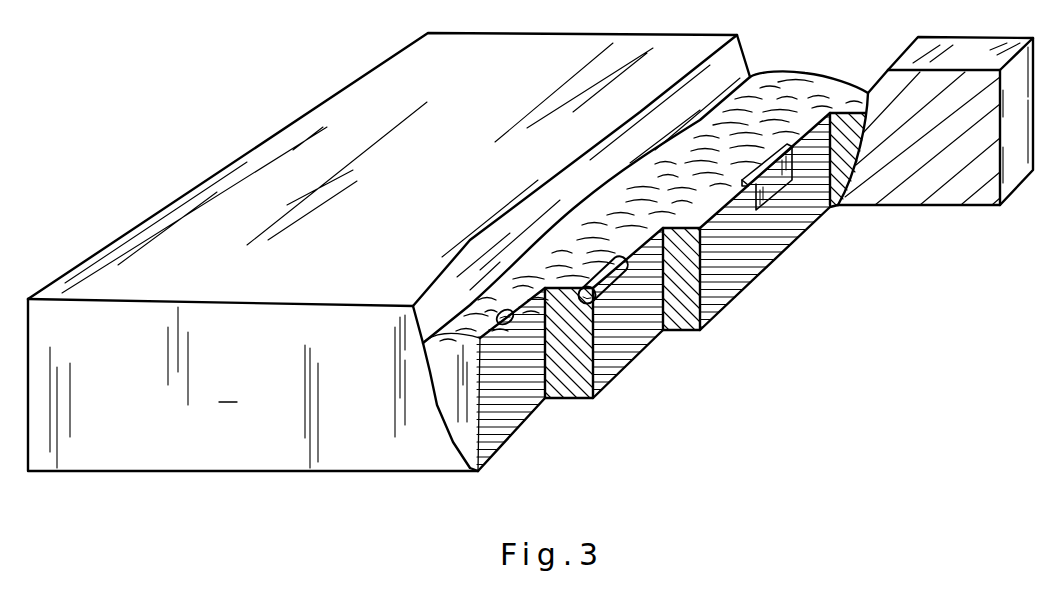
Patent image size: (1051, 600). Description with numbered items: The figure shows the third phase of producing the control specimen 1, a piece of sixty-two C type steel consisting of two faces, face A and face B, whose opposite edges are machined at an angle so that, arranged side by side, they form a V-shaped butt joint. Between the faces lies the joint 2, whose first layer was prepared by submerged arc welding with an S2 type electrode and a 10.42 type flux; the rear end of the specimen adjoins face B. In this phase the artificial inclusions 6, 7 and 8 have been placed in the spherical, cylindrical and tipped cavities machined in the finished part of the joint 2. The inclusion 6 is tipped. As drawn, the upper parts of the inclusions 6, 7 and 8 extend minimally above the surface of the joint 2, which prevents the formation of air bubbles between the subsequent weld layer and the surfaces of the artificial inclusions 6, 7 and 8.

The control specimen 1 is at (302, 116).
The joint 2 is at (782, 83).
The artificial inclusion 6 is at (512, 323).
The artificial inclusion 7 is at (623, 280).
The artificial inclusion 8 is at (790, 182).
The face B is at (1008, 131).